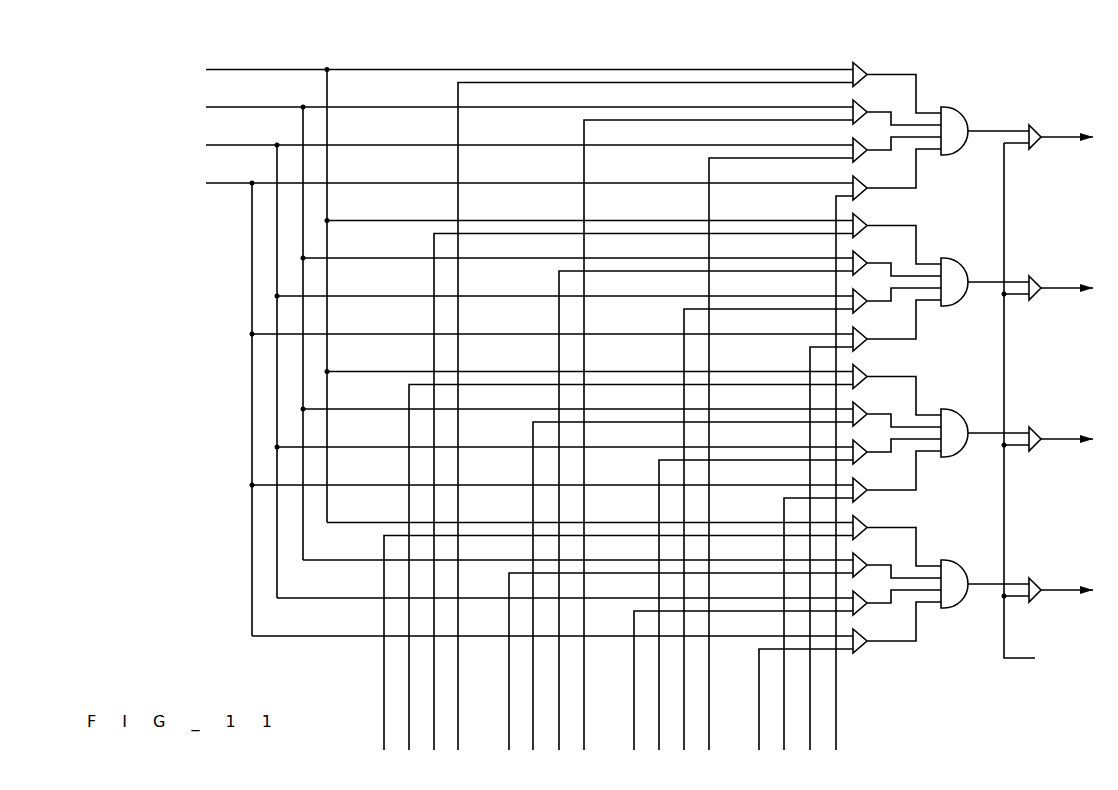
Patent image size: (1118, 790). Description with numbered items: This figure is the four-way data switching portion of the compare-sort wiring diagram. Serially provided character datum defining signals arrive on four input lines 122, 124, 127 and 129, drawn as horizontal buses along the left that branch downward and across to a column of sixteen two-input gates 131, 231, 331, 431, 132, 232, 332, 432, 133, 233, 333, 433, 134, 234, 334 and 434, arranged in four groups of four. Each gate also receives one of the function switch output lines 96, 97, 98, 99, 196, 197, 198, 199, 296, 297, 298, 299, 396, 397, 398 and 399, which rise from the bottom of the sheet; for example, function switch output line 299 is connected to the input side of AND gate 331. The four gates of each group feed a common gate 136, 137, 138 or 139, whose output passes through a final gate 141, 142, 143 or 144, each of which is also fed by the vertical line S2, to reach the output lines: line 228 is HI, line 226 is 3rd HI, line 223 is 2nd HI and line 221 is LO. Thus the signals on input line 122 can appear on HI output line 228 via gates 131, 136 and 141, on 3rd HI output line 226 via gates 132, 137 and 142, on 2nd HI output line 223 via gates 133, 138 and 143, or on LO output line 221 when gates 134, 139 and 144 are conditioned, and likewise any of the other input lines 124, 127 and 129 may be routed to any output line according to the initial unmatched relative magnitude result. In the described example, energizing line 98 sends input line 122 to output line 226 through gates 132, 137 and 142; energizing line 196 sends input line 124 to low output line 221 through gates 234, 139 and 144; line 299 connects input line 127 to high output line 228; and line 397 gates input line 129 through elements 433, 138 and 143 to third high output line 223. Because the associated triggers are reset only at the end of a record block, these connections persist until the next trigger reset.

The input line 122 is at (274, 72).
The input line 124 is at (275, 106).
The input line 127 is at (274, 148).
The input line 129 is at (252, 186).
The function switch output line 96 is at (380, 664).
The function switch output line 97 is at (405, 678).
The function switch output line 98 is at (434, 712).
The function switch output line 99 is at (458, 727).
The function switch output line 196 is at (505, 664).
The function switch output line 197 is at (529, 678).
The function switch output line 198 is at (559, 712).
The function switch output line 199 is at (584, 727).
The function switch output line 296 is at (630, 664).
The function switch output line 297 is at (655, 678).
The function switch output line 298 is at (684, 712).
The function switch output line 299 is at (709, 727).
The function switch output line 396 is at (755, 664).
The function switch output line 397 is at (780, 678).
The function switch output line 398 is at (810, 712).
The function switch output line 399 is at (836, 727).
The gate 131 is at (858, 67).
The gate 231 is at (858, 104).
The AND gate 331 is at (855, 142).
The gate 431 is at (858, 180).
The gate 132 is at (858, 218).
The gate 232 is at (858, 255).
The gate 332 is at (858, 296).
The gate 432 is at (858, 331).
The gate 133 is at (858, 369).
The gate 233 is at (858, 406).
The gate 333 is at (858, 446).
The gate 433 is at (858, 482).
The gate 134 is at (858, 520).
The gate 234 is at (858, 557).
The gate 334 is at (860, 612).
The gate 434 is at (860, 650).
The gate 136 is at (946, 108).
The gate 137 is at (950, 268).
The gate 138 is at (950, 417).
The gate 139 is at (952, 568).
The gate 141 is at (1031, 128).
The gate 142 is at (1032, 284).
The gate 143 is at (1032, 434).
The gate 144 is at (1033, 585).
The HI output line 228 is at (1055, 137).
The 3rd HI output line 226 is at (1052, 289).
The 2nd HI output line 223 is at (1052, 440).
The LO output line 221 is at (1055, 591).
The strobe signal line S2 is at (1031, 406).